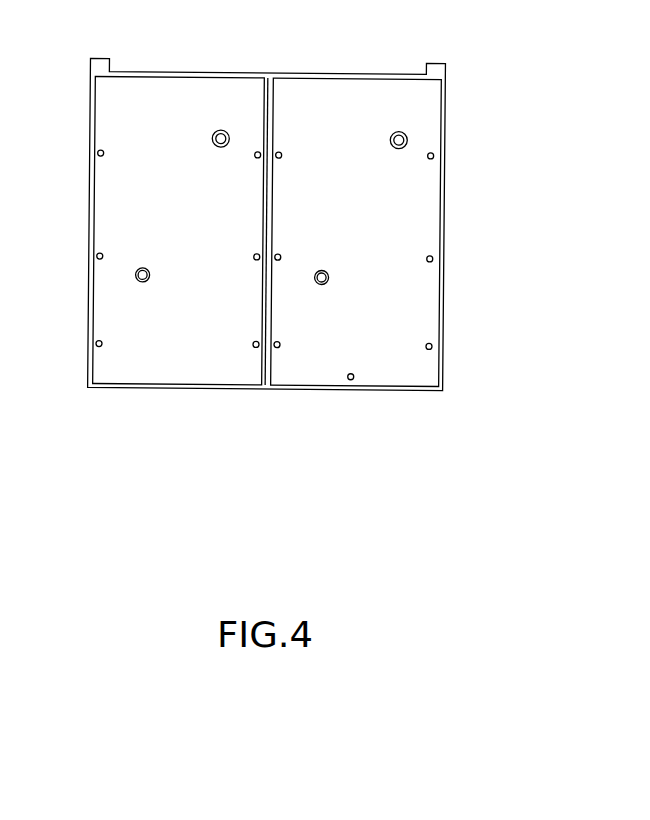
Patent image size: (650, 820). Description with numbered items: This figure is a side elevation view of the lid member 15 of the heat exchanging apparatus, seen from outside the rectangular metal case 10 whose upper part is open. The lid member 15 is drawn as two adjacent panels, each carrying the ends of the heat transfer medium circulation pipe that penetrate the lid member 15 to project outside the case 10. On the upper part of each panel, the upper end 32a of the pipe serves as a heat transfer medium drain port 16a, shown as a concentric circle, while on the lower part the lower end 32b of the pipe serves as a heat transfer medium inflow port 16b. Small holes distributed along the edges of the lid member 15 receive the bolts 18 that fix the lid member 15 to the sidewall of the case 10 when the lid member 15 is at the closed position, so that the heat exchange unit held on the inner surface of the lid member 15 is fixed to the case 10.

The case 10 is at (446, 96).
The lid member 15 is at (170, 95).
The heat transfer medium drain port 16a is at (220, 132).
The heat transfer medium inflow port 16b is at (149, 282).
The bolt 18 is at (97, 153).
The upper end 32a is at (228, 139).
The lower end 32b is at (145, 270).